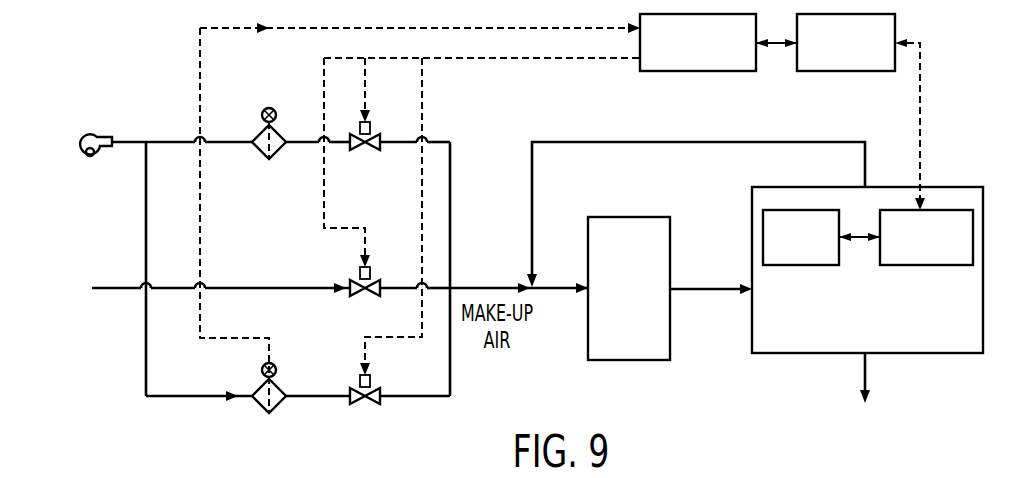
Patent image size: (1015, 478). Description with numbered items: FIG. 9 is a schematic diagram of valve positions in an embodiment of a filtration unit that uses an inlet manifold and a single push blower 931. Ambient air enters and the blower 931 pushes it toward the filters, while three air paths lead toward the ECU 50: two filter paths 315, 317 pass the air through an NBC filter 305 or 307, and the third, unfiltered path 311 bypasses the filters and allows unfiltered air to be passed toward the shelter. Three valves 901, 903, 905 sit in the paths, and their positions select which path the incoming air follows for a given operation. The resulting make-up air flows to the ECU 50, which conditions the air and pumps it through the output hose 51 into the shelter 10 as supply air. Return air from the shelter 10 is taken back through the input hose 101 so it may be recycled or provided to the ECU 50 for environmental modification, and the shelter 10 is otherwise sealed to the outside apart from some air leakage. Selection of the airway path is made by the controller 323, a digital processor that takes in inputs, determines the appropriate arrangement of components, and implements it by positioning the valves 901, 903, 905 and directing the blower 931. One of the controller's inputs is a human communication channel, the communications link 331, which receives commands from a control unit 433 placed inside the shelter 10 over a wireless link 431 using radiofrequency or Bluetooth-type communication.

The shelter 10 is at (867, 324).
The ECU 50 is at (634, 217).
The output hose 51 is at (700, 289).
The input hose 101 is at (584, 142).
The NBC filter 305 is at (281, 133).
The NBC filter 307 is at (281, 387).
The unfiltered path 311 is at (258, 288).
The filter path 315 is at (300, 148).
The filter path 317 is at (319, 396).
The controller 323 is at (661, 72).
The communications link 331 is at (835, 72).
The wireless link 431 is at (957, 266).
The control unit 433 is at (799, 266).
The valve 901 is at (372, 134).
The valve 903 is at (372, 280).
The valve 905 is at (372, 388).
The blower 931 is at (98, 137).